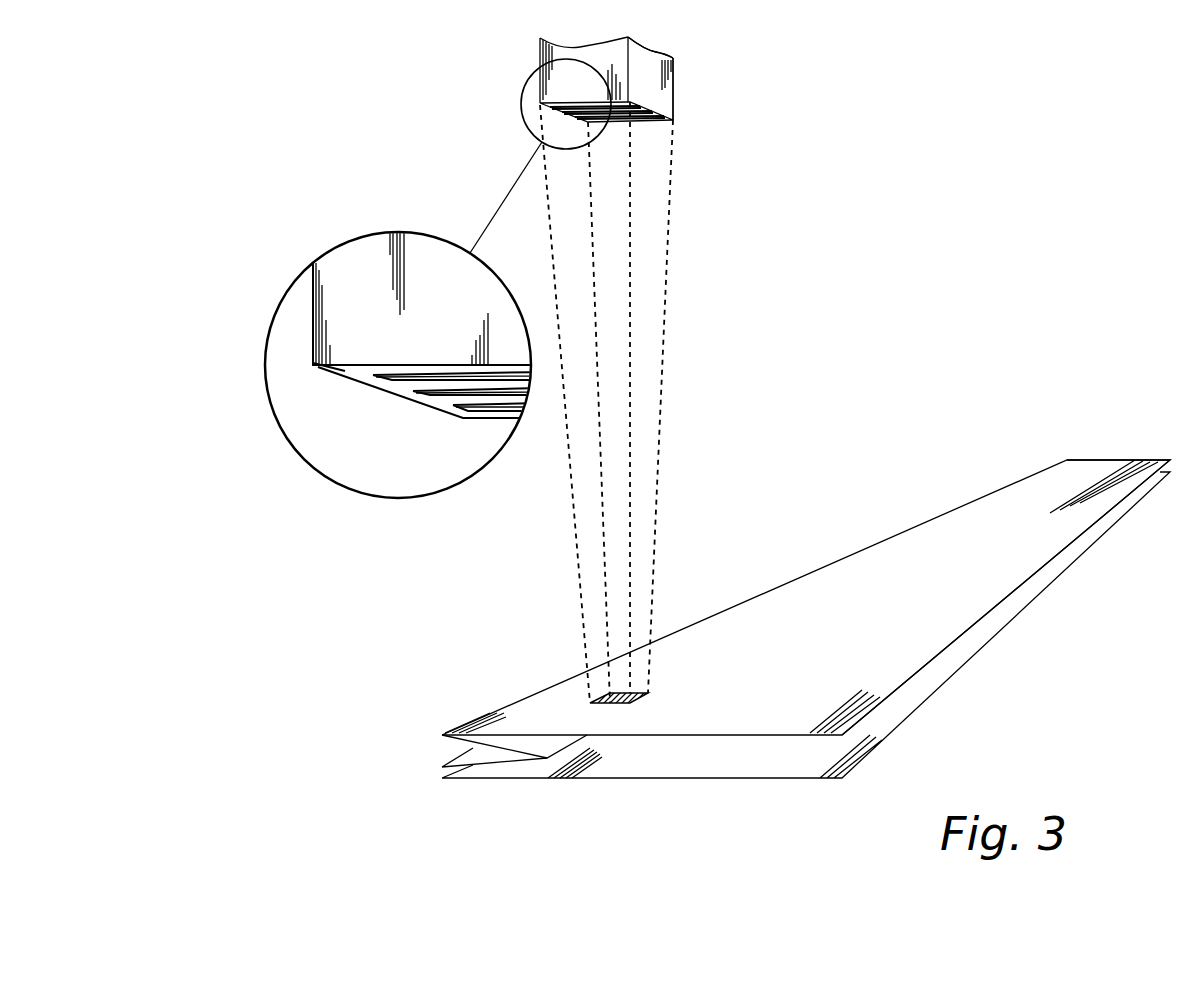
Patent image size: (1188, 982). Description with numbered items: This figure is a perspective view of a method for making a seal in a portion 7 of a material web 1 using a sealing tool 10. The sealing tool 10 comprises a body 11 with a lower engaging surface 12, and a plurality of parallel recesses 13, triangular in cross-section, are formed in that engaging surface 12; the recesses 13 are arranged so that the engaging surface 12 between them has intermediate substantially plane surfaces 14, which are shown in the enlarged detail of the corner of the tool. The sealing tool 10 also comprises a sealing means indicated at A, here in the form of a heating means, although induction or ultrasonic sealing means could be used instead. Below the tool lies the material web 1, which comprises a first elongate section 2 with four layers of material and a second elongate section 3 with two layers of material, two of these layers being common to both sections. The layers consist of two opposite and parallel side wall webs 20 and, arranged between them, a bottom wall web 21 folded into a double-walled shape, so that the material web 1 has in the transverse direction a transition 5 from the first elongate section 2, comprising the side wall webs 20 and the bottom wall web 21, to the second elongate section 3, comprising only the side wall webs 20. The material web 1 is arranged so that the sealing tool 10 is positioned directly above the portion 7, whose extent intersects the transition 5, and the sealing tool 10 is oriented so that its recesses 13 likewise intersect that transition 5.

The sealing means A is at (690, 42).
The sealing tool 10 is at (712, 130).
The body 11 is at (660, 88).
The engaging surface 12 is at (347, 370).
The recesses 13 is at (393, 380).
The intermediate plane surfaces 14 is at (453, 387).
The material web 1 is at (811, 514).
The side wall webs 20 is at (937, 627).
The bottom wall web 21 is at (442, 742).
The first elongate section 2 is at (455, 792).
The transition 5 is at (528, 792).
The second elongate section 3 is at (656, 792).
The portion 7 is at (605, 698).